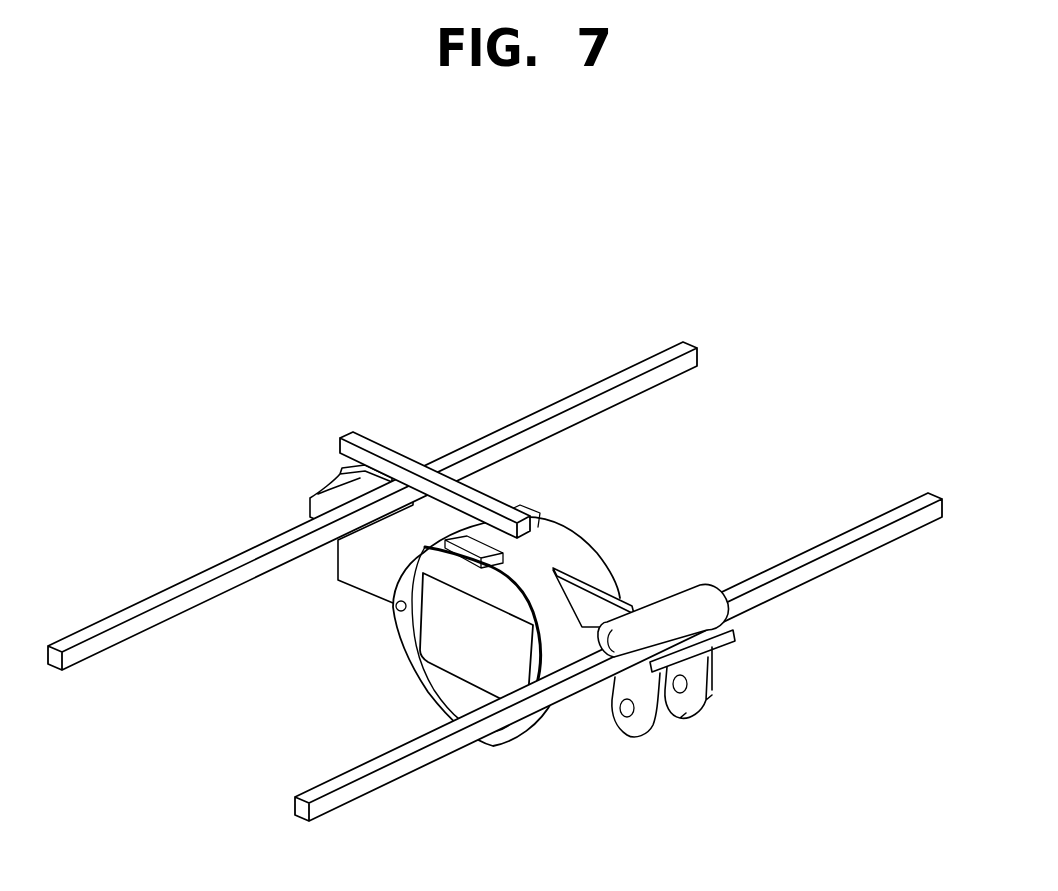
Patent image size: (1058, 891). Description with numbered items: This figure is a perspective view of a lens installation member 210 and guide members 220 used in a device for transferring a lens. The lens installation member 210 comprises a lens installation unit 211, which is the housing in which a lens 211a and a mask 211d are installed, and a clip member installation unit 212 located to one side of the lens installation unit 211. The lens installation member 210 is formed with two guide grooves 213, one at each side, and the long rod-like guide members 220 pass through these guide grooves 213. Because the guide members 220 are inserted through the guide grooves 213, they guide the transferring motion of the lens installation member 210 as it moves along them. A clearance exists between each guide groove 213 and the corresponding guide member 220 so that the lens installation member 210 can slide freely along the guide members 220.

The lens installation member 210 is at (342, 428).
The lens installation unit 211 is at (515, 537).
The lens 211a is at (453, 648).
The mask 211d is at (408, 627).
The clip member installation unit 212 is at (720, 670).
The guide groove 213 is at (342, 465).
The guide member 220 is at (763, 583).